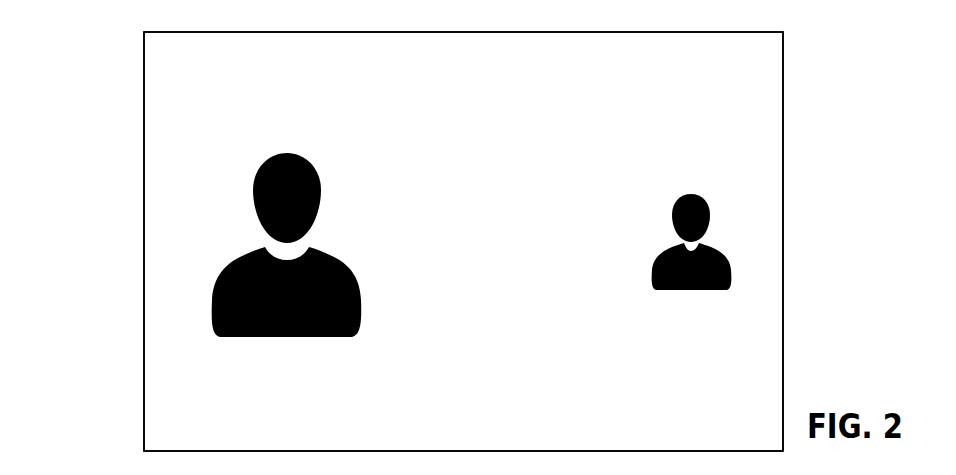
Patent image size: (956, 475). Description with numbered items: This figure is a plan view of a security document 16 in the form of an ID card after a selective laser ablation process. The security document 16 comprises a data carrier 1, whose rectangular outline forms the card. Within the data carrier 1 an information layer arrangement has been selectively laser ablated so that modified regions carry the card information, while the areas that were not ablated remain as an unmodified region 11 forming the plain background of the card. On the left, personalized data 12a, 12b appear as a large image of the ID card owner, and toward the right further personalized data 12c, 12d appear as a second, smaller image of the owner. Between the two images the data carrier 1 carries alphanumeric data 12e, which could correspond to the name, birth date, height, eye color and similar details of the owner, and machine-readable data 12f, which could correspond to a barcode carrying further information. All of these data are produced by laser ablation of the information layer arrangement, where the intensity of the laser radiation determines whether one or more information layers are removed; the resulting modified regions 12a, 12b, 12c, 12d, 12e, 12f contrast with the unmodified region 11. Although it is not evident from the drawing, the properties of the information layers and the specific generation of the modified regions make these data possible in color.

The data carrier 1 is at (165, 310).
The unmodified region 11 is at (767, 369).
The first modified region 12a is at (309, 226).
The second modified region 12b is at (303, 163).
The third modified region 12c is at (688, 203).
The personalized data region 12d is at (687, 193).
The alphanumeric data 12e is at (536, 196).
The machine-readable data 12f is at (417, 284).
The security document 16 is at (116, 58).